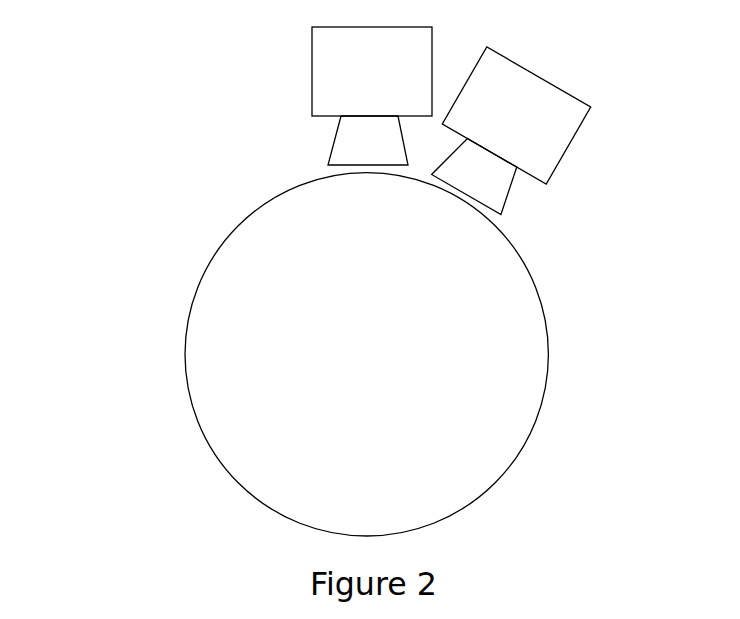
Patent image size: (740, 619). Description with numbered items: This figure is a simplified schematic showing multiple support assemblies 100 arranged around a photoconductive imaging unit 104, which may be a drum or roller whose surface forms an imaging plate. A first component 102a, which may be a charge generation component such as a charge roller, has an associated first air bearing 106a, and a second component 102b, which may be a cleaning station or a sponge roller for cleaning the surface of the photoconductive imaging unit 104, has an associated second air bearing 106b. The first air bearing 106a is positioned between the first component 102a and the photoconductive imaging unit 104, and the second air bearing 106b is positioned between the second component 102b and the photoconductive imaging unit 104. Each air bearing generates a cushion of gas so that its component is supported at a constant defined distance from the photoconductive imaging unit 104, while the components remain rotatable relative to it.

The support assembly 100 is at (136, 72).
The first component 102a is at (320, 60).
The second component 102b is at (560, 96).
The photoconductive imaging unit 104 is at (390, 370).
The first air bearing 106a is at (337, 142).
The second air bearing 106b is at (502, 189).